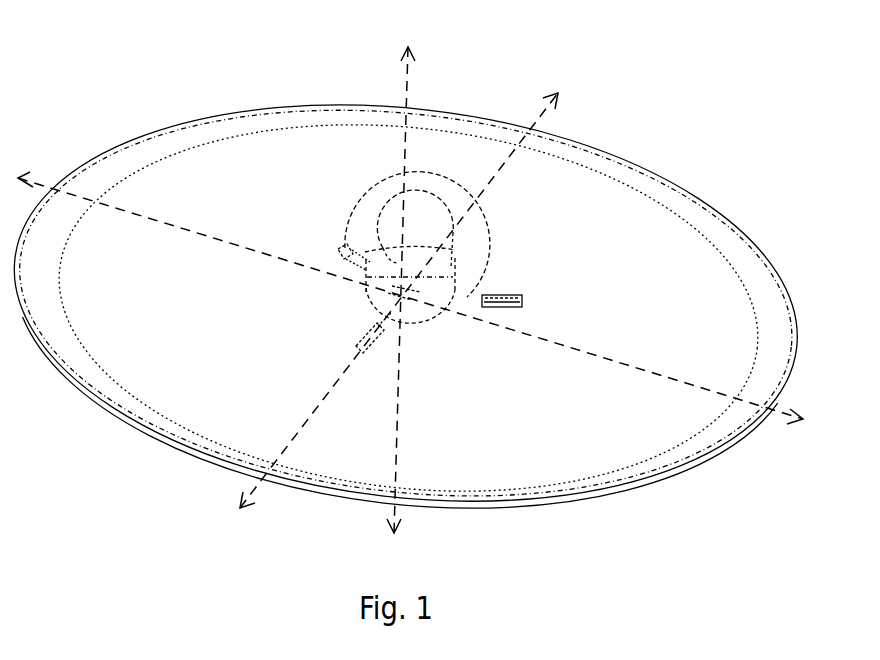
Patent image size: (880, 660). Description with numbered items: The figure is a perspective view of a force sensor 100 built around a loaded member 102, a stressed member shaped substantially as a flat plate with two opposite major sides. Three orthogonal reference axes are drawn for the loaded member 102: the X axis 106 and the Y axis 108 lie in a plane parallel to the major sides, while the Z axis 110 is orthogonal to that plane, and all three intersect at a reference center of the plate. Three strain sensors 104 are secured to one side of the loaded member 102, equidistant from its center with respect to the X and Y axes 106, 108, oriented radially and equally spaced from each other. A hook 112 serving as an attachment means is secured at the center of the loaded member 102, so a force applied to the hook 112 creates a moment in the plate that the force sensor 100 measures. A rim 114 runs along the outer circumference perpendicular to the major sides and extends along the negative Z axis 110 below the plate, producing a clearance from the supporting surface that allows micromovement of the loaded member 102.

The force sensor 100 is at (106, 105).
The loaded member 102 is at (222, 383).
The strain sensors 104 is at (340, 238).
The X axis 106 is at (782, 413).
The Y axis 108 is at (545, 117).
The Z axis 110 is at (412, 82).
The hook 112 is at (435, 190).
The rim 114 is at (567, 493).